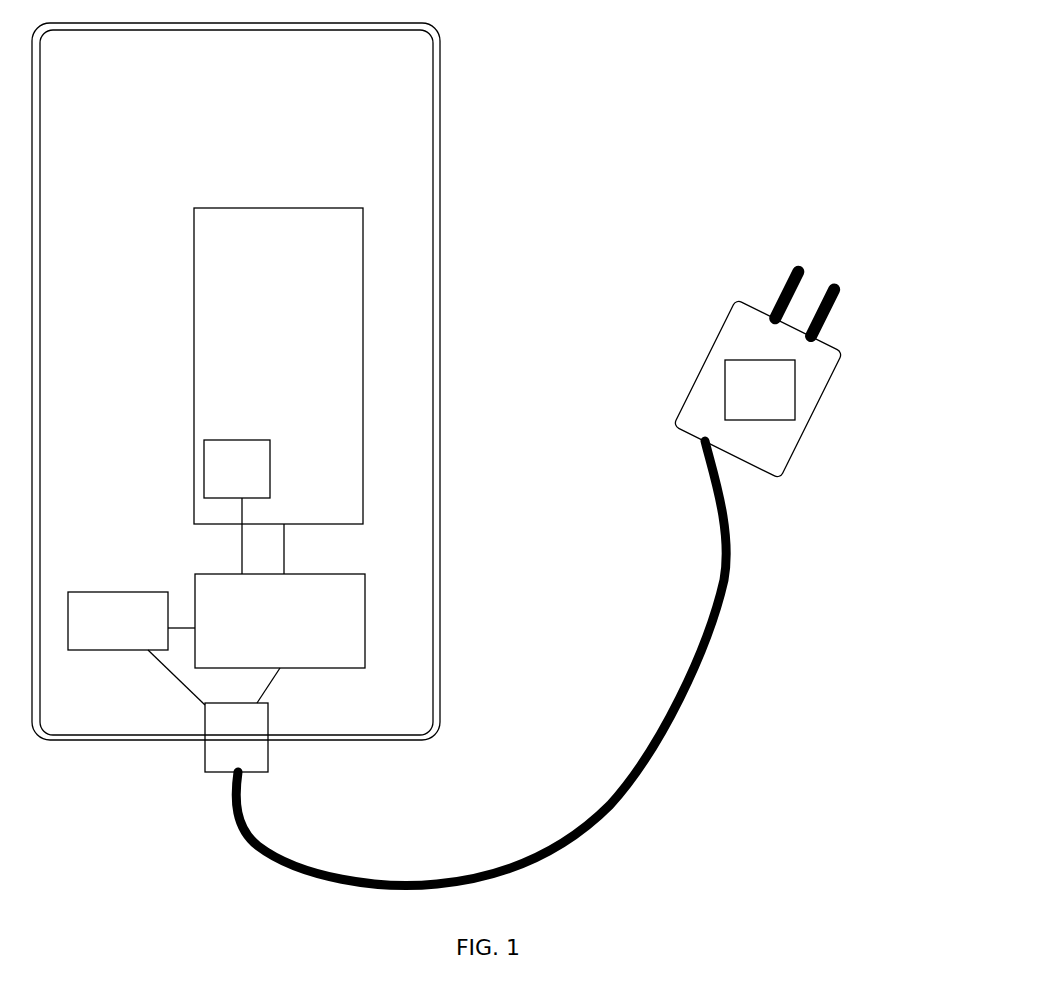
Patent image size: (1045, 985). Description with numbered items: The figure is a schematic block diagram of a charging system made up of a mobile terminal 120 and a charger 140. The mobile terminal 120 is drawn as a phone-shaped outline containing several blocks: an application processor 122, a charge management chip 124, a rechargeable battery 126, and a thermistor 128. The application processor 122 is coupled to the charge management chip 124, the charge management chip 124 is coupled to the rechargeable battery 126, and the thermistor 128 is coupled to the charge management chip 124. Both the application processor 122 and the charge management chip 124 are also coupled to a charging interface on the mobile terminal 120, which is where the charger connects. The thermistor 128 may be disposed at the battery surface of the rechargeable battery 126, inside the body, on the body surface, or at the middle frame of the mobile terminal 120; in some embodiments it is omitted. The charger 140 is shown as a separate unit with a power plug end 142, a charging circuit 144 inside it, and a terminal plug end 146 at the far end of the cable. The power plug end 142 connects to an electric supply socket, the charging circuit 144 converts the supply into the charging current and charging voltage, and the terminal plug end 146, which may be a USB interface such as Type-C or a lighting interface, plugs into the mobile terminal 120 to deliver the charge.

The mobile terminal 120 is at (222, 70).
The application processor 122 is at (118, 621).
The charge management chip 124 is at (280, 621).
The rechargeable battery 126 is at (278, 366).
The thermistor 128 is at (240, 469).
The charger 140 is at (916, 228).
The power plug end 142 is at (841, 321).
The charging circuit 144 is at (757, 390).
The terminal plug end 146 is at (276, 761).